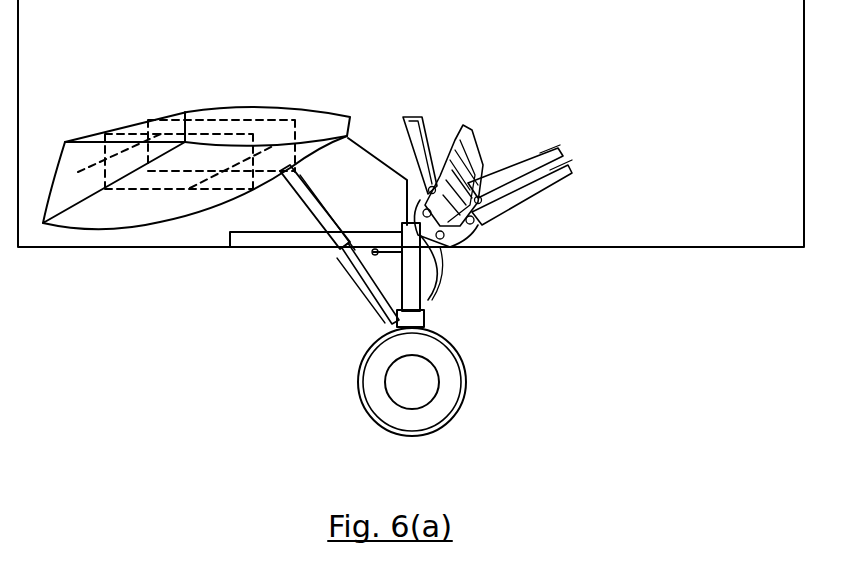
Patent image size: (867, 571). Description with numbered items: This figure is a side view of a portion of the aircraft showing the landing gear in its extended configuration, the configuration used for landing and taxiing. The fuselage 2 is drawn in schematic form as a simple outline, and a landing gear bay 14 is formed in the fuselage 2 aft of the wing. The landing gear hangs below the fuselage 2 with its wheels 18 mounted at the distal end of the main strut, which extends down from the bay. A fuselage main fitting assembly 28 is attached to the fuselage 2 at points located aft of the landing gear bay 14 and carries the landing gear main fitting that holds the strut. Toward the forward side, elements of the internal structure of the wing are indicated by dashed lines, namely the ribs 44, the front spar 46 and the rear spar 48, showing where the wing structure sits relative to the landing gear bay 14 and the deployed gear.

The fuselage 2 is at (685, 92).
The landing gear bay 14 is at (285, 210).
The wheels 18 is at (415, 384).
The fuselage main fitting assembly 28 is at (475, 233).
The ribs 44 is at (176, 193).
The front spar 46 is at (92, 165).
The rear spar 48 is at (263, 152).